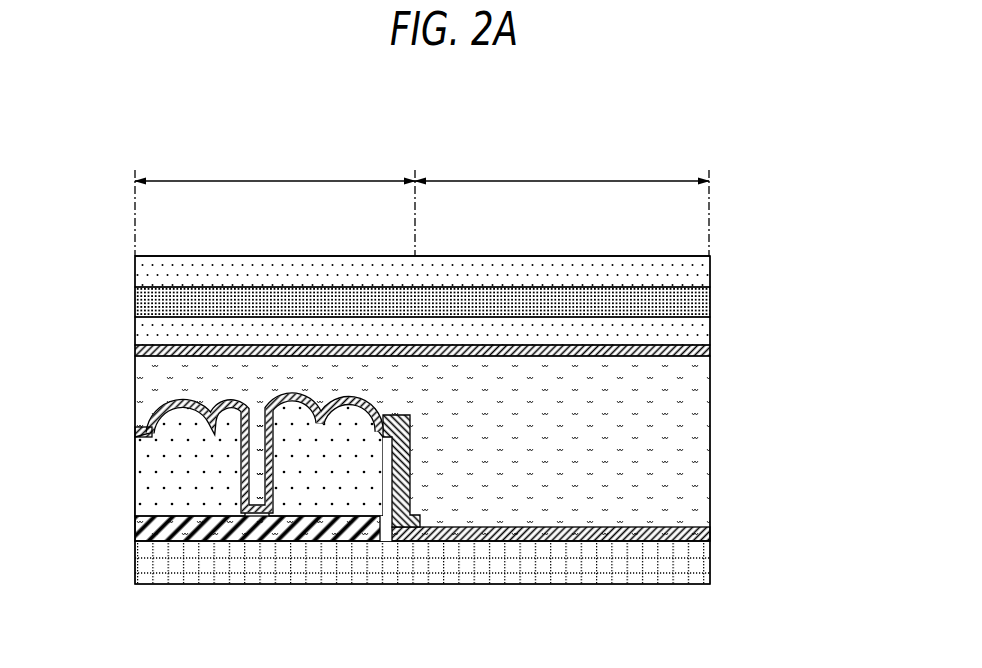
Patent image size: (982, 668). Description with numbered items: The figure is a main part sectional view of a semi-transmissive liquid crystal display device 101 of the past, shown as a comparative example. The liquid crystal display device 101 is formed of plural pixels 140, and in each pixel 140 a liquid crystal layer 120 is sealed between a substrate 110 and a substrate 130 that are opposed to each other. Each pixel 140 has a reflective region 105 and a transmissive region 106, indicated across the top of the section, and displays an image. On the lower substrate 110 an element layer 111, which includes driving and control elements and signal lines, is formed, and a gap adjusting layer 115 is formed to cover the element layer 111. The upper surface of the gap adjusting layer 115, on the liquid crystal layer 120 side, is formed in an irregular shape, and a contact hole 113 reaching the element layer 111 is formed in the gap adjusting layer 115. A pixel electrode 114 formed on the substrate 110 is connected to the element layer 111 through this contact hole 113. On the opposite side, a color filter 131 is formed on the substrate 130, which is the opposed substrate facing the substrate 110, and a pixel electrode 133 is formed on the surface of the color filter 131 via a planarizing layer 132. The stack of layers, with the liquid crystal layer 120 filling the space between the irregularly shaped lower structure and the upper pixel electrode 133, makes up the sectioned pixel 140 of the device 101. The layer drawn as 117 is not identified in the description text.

The liquid crystal display device 101 is at (733, 166).
The reflective region 105 is at (275, 203).
The transmissive region 106 is at (562, 166).
The substrate 110 is at (690, 565).
The element layer 111 is at (247, 543).
The contact hole 113 is at (253, 420).
The pixel electrode 114 is at (652, 528).
The gap adjusting layer 115 is at (138, 427).
The organic light emitting layer 117 is at (182, 398).
The liquid crystal layer 120 is at (667, 410).
The substrate 130 is at (690, 272).
The color filter 131 is at (683, 305).
The planarizing layer 132 is at (685, 327).
The pixel electrode 133 is at (708, 357).
The pixel 140 is at (719, 252).